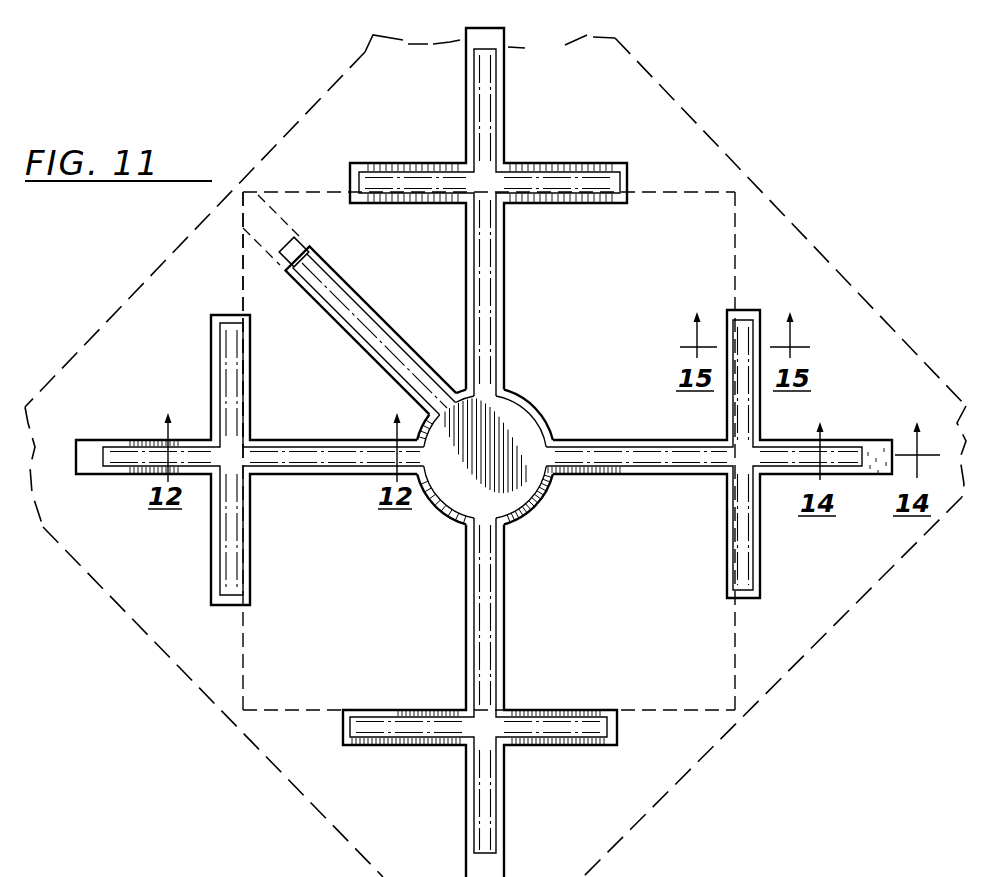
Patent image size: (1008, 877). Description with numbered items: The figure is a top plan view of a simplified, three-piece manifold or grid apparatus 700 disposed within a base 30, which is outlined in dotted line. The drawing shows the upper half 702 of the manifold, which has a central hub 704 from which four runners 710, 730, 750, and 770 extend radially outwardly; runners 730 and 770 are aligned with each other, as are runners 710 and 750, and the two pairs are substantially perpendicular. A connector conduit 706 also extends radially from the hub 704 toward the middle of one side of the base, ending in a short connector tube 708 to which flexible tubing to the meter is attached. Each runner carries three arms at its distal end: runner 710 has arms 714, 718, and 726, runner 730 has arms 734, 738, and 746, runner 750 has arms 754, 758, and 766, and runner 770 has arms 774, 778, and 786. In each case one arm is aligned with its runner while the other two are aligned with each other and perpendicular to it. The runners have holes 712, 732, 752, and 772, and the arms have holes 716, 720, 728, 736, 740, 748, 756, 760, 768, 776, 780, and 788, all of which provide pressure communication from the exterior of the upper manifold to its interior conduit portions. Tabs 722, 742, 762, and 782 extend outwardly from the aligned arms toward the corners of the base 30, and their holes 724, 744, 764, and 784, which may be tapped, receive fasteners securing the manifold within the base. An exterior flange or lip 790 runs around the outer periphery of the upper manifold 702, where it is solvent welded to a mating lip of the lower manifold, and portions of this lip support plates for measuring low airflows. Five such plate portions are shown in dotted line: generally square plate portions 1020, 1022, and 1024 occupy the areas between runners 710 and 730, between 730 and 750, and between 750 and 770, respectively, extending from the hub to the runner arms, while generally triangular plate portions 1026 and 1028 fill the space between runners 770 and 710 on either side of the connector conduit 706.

The base 30 is at (840, 268).
The manifold or grid apparatus 700 is at (486, 451).
The upper half of the manifold 702 is at (548, 328).
The central hub 704 is at (505, 438).
The connector conduit 706 is at (349, 305).
The connector tube 708 is at (305, 246).
The runner 710 is at (498, 246).
The aperture 712 is at (484, 308).
The runner arm 714 is at (436, 178).
The aperture 716 is at (366, 181).
The runner arm 718 is at (489, 112).
The aperture 720 is at (490, 57).
The tab 722 is at (467, 35).
The aperture 724 is at (491, 37).
The runner arm 726 is at (572, 178).
The aperture 728 is at (613, 181).
The runner 730 is at (571, 442).
The aperture 732 is at (620, 455).
The runner arm 734 is at (733, 418).
The aperture 736 is at (745, 330).
The runner arm 738 is at (772, 450).
The aperture 740 is at (851, 452).
The tab 742 is at (878, 446).
The aperture 744 is at (880, 473).
The runner arm 746 is at (750, 558).
The aperture 748 is at (742, 580).
The runner 750 is at (497, 567).
The aperture 752 is at (489, 600).
The runner arm 754 is at (566, 720).
The aperture 756 is at (596, 725).
The runner arm 758 is at (487, 780).
The aperture 760 is at (483, 842).
The tab 762 is at (496, 857).
The aperture 764 is at (480, 868).
The runner arm 766 is at (408, 722).
The aperture 768 is at (362, 727).
The runner 770 is at (283, 448).
The hole 772 is at (349, 458).
The runner arm 774 is at (241, 548).
The hole 776 is at (234, 583).
The runner arm 778 is at (133, 452).
The hole 780 is at (113, 456).
The tab 782 is at (96, 447).
The aperture 784 is at (88, 456).
The runner arm 786 is at (241, 398).
The hole 788 is at (234, 334).
The exterior flange or lip 790 is at (510, 382).
The plate portion 1020 is at (735, 266).
The plate portion 1022 is at (727, 640).
The plate portion 1024 is at (243, 650).
The plate portion 1026 is at (243, 280).
The plate portion 1028 is at (326, 197).